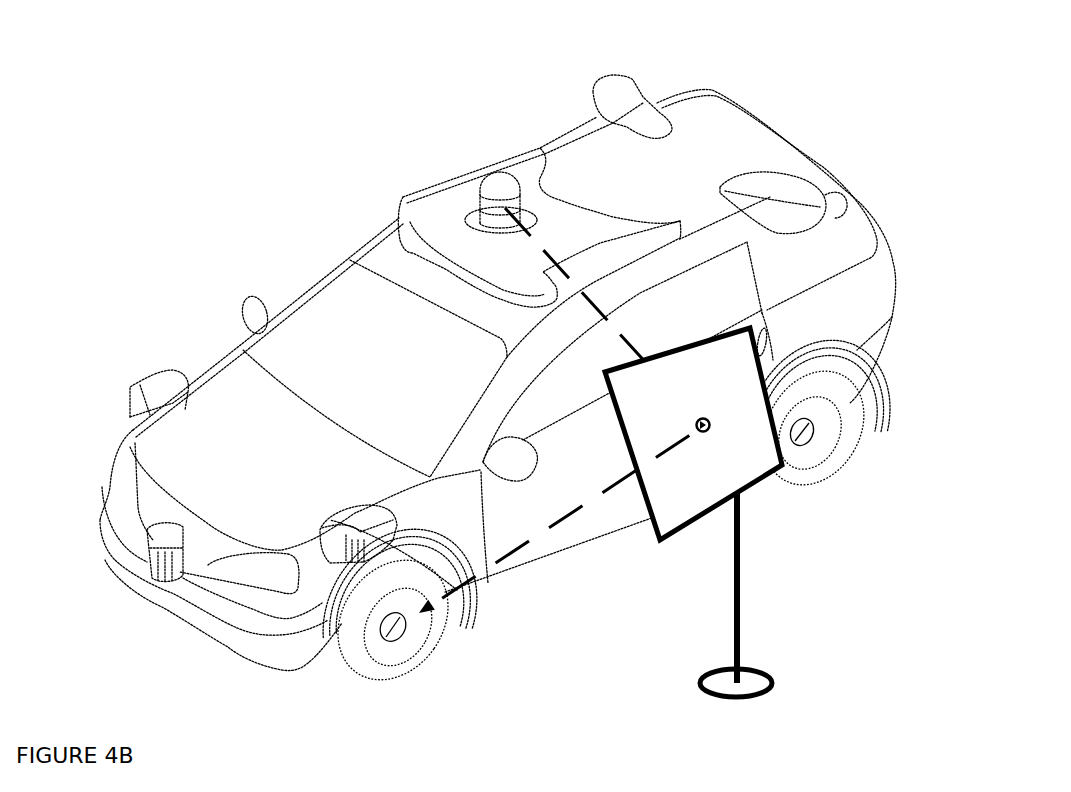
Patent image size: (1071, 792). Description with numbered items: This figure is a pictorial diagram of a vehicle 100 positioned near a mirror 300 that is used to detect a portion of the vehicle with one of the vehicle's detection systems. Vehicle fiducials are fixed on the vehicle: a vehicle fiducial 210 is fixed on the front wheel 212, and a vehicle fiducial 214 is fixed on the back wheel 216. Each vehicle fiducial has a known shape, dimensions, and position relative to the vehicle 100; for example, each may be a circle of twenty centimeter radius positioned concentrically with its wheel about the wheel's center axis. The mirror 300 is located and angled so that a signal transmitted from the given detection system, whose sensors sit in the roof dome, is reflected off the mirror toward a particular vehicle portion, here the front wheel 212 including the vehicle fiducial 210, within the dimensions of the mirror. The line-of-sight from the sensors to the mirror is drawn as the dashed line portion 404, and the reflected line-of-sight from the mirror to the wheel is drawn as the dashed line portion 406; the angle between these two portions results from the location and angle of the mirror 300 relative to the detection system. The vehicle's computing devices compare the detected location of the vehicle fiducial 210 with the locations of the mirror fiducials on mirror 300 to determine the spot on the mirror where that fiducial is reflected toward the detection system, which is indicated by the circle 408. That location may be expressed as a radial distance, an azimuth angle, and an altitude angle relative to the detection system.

The vehicle 100 is at (517, 393).
The vehicle fiducial 210 is at (406, 630).
The front wheel 212 is at (372, 681).
The vehicle fiducial 214 is at (812, 437).
The back wheel 216 is at (815, 467).
The mirror 300 is at (635, 512).
The dashed line portion 404 is at (706, 406).
The dashed line portion 406 is at (693, 434).
The circle 408 is at (710, 433).